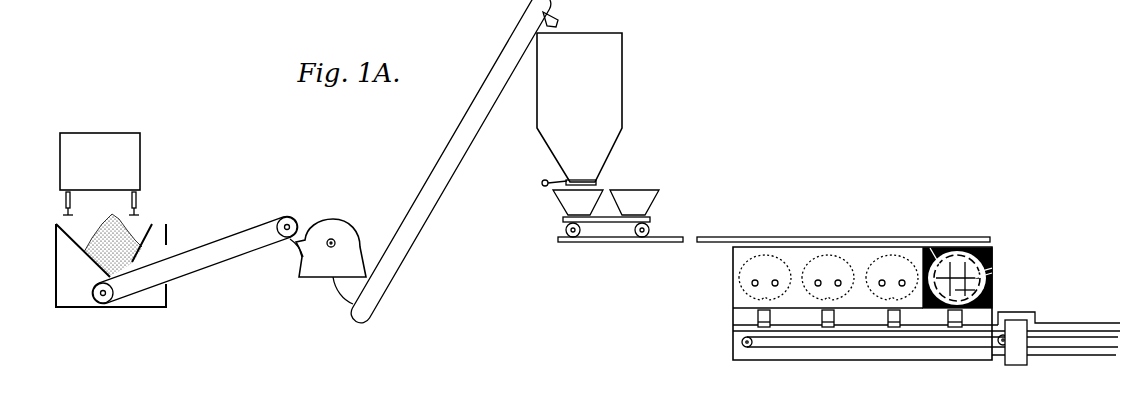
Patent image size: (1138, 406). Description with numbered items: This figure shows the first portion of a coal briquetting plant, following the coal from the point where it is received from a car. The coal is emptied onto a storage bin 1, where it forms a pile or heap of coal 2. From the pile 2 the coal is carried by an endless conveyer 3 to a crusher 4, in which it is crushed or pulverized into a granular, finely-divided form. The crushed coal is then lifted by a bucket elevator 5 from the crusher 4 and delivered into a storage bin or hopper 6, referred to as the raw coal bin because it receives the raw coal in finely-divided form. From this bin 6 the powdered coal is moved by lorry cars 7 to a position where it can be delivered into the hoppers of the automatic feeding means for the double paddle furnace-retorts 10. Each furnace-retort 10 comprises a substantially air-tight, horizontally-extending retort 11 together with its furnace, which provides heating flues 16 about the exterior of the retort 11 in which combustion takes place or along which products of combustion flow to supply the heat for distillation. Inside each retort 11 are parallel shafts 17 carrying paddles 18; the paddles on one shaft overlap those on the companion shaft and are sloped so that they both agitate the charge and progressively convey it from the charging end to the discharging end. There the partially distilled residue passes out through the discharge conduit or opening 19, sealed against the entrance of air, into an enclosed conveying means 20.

The storage bin 1 is at (107, 252).
The pile of coal 2 is at (134, 232).
The endless conveyer 3 is at (238, 229).
The crusher 4 is at (318, 275).
The bucket elevator 5 is at (437, 152).
The storage bin or hopper 6 is at (579, 109).
The lorry cars 7 is at (644, 188).
The double paddle furnace-retorts 10 is at (737, 283).
The retort 11 is at (875, 258).
The heating flues 16 is at (975, 247).
The parallel shafts 17 is at (993, 268).
The paddles 18 is at (930, 247).
The discharge conduit or opening 19 is at (827, 327).
The enclosed conveying means 20 is at (860, 347).